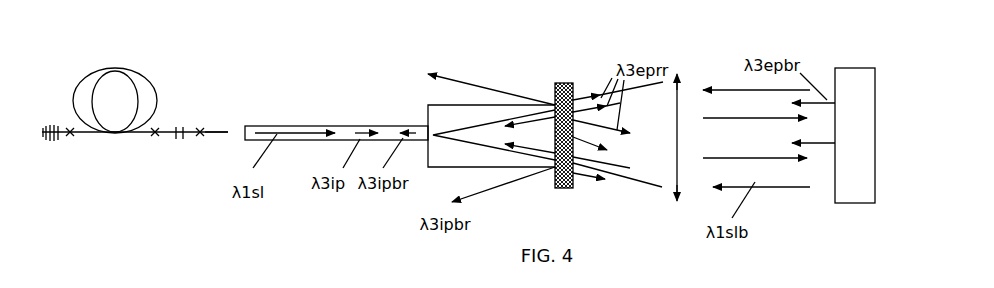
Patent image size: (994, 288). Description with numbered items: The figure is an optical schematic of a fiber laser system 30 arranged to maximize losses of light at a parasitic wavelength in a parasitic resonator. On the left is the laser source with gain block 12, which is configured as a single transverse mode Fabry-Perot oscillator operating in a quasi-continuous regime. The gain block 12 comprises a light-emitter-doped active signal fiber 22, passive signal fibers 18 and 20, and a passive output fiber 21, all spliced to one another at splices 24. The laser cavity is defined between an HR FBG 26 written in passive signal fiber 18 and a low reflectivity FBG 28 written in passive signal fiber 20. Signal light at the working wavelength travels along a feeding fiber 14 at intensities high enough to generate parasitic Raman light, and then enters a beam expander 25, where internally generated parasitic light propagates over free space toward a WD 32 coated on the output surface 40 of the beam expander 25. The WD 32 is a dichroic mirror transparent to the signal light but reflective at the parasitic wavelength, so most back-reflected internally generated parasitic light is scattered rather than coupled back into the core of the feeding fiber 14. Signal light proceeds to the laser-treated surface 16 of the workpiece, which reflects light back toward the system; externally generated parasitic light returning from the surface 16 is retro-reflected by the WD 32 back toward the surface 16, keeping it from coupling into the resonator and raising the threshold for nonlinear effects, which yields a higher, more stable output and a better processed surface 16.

The gain block 12 is at (113, 157).
The feeding fiber 14 is at (332, 121).
The laser-treated surface 16 is at (839, 139).
The passive signal fiber 18 is at (57, 138).
The passive signal fiber 20 is at (186, 137).
The passive output fiber 21 is at (220, 129).
The active signal fiber 22 is at (106, 104).
The splice 24 is at (68, 130).
The beam expander 25 is at (447, 155).
The HR FBG 26 is at (47, 138).
The low reflectivity FBG 28 is at (171, 137).
The fiber laser system 30 is at (452, 48).
The WD 32 is at (573, 188).
The output surface 40 is at (618, 134).